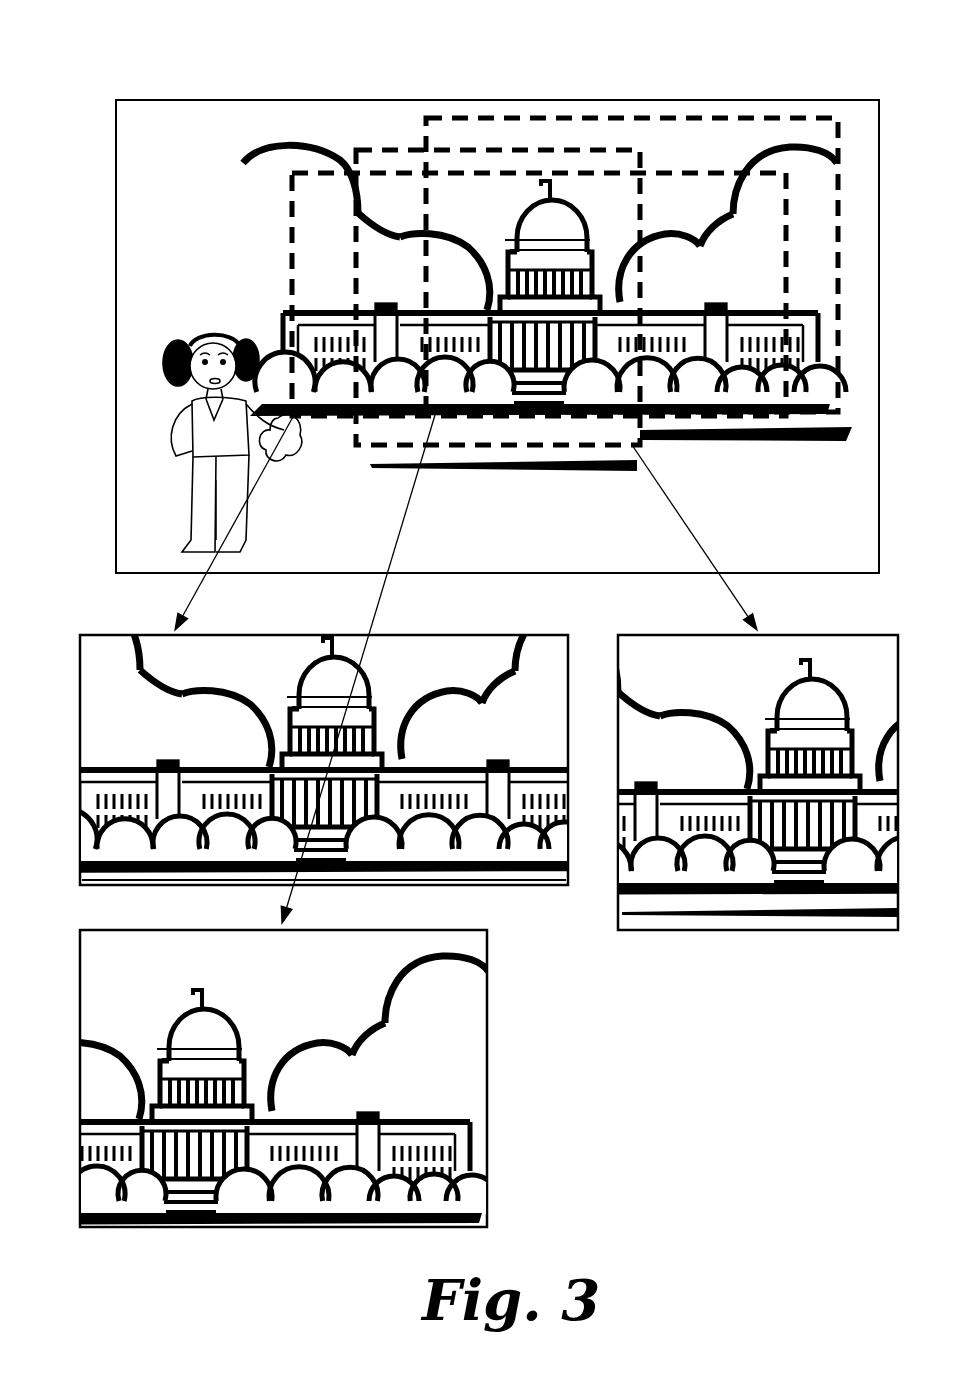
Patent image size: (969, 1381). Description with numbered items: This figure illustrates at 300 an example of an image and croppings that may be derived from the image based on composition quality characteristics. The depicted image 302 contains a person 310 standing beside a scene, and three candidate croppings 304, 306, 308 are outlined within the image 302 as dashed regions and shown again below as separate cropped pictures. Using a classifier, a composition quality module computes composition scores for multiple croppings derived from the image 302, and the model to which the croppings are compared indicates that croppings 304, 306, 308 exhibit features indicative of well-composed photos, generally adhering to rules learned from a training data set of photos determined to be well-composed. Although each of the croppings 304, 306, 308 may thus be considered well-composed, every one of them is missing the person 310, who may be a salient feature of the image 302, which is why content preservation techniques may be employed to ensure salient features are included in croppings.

The example of an image and croppings 300 is at (186, 61).
The image 302 is at (188, 153).
The cropping 304 is at (724, 102).
The cropping 306 is at (395, 133).
The cropping 308 is at (601, 157).
The person 310 is at (176, 317).